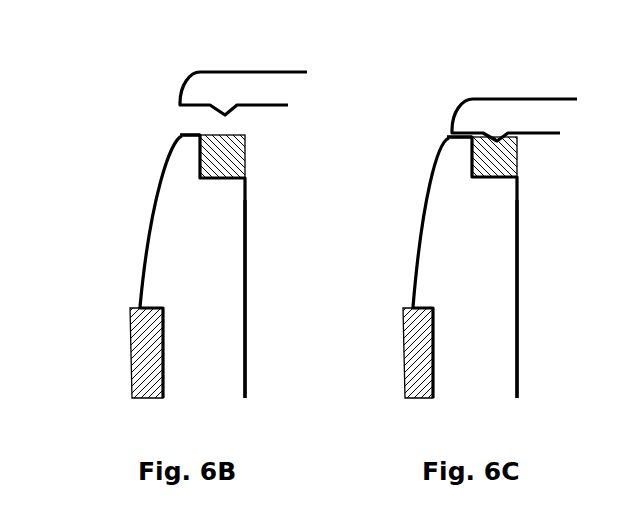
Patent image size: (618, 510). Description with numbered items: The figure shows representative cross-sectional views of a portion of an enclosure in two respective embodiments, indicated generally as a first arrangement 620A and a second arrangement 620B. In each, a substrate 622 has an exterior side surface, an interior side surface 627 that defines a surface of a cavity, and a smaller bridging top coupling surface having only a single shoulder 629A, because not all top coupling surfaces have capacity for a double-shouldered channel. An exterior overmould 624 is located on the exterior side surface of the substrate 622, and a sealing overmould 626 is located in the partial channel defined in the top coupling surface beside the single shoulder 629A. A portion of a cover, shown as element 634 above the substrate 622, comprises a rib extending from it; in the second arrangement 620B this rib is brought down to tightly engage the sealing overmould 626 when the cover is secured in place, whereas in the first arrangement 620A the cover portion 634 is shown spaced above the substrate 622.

In FIG. 6B, the tab / mating plate 634 is at (233, 72).
In FIG. 6C, the tab / mating plate 634 is at (505, 99).
In FIG. 6B, the single shoulder 629A is at (190, 130).
In FIG. 6C, the single shoulder 629A is at (457, 155).
In FIG. 6B, the sealing overmould 626 is at (243, 155).
In FIG. 6C, the sealing overmould 626 is at (518, 153).
In FIG. 6B, the substrate 622 is at (192, 266).
In FIG. 6C, the substrate 622 is at (465, 267).
In FIG. 6B, the exterior overmould 624 is at (130, 330).
In FIG. 6C, the exterior overmould 624 is at (403, 330).
In FIG. 6B, the interior side surface 627 is at (280, 295).
In FIG. 6C, the interior side surface 627 is at (553, 297).
In FIG. 6B, the contact assembly (first configuration) 620A is at (130, 415).
In FIG. 6C, the contact assembly (second configuration) 620B is at (402, 413).